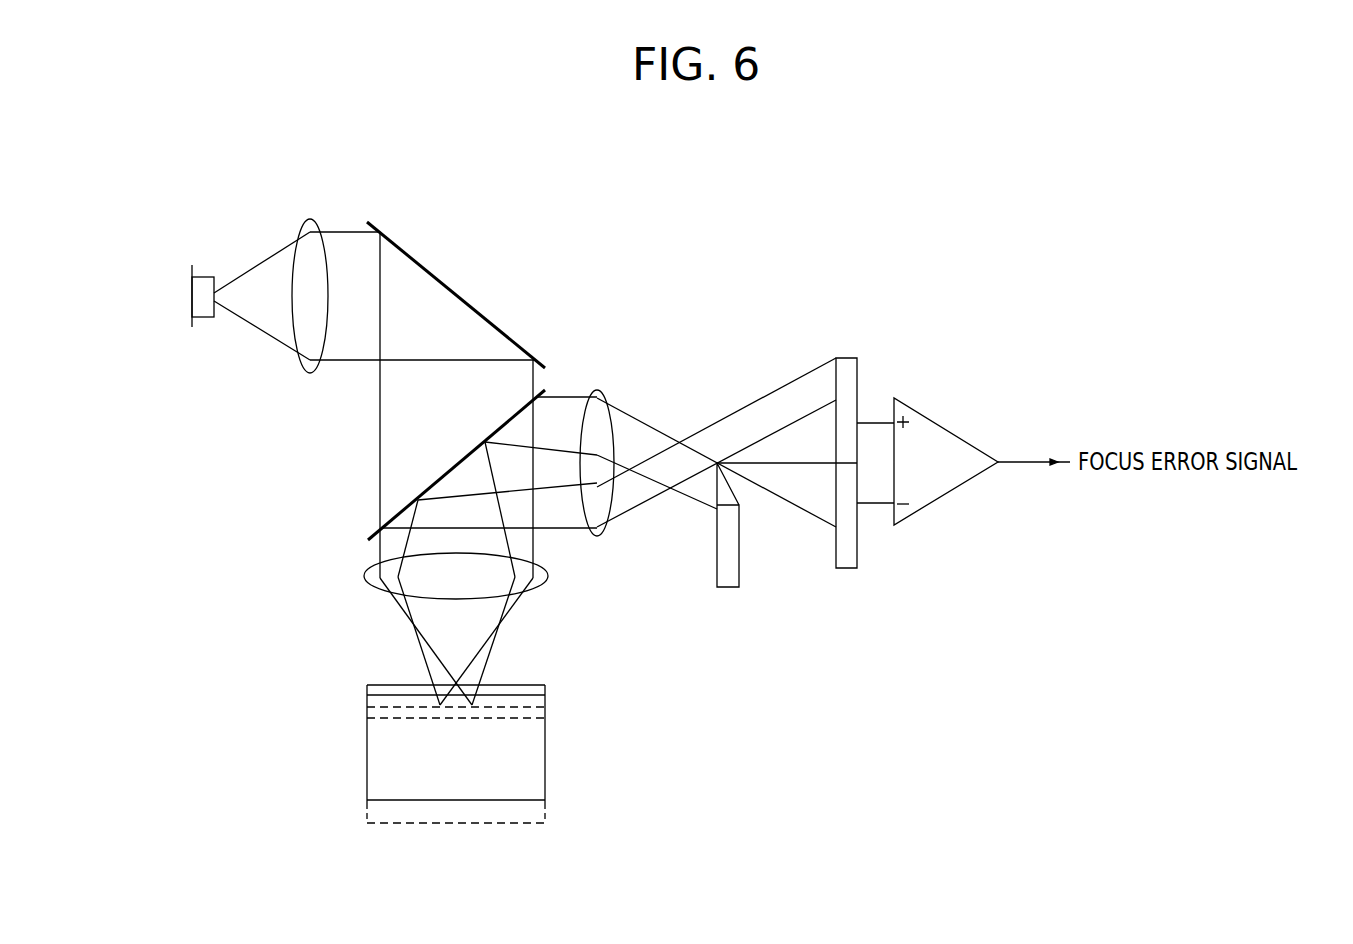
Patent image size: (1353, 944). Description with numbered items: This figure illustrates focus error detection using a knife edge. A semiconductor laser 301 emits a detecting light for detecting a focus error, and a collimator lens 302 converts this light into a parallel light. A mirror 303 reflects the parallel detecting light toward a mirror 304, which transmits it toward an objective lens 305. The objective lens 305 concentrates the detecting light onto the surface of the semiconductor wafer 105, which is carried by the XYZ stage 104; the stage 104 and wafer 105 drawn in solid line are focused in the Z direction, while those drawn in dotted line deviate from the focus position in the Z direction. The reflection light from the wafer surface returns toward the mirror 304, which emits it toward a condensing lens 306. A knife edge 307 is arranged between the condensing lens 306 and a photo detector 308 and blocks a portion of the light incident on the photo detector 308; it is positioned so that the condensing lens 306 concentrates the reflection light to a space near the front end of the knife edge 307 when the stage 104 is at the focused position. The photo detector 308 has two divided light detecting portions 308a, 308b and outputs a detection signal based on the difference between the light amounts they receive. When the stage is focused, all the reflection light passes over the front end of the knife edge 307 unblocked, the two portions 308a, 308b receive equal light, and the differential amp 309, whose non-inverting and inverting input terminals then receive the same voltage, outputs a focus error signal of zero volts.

The semiconductor laser 301 is at (203, 318).
The collimator lens 302 is at (308, 222).
The mirror 303 is at (460, 295).
The mirror 304 is at (460, 463).
The objective lens 305 is at (365, 574).
The condensing lens 306 is at (595, 390).
The knife edge 307 is at (727, 587).
The photo detector 308 is at (872, 453).
The light detecting portion 308a is at (850, 372).
The light detecting portion 308b is at (850, 553).
The differential amp 309 is at (947, 428).
The XYZ stage 104 is at (540, 810).
The semiconductor wafer 105 is at (377, 689).